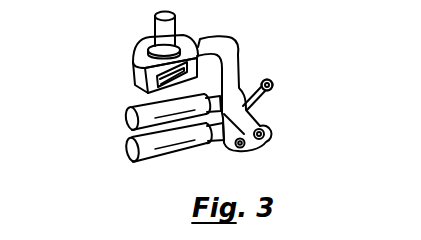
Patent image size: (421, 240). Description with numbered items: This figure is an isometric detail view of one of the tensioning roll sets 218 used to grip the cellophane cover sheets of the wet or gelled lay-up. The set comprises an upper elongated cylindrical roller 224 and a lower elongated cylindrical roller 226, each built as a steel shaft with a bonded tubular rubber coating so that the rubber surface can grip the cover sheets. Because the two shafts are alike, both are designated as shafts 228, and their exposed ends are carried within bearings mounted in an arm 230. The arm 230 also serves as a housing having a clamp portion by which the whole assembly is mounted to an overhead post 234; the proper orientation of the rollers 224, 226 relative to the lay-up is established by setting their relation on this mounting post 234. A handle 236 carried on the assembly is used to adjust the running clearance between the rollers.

The tensioning roll set 218 is at (126, 81).
The upper elongated cylindrical roller 224 is at (129, 117).
The lower elongated cylindrical roller 226 is at (129, 149).
The shaft 228 is at (238, 68).
The arm 230 is at (236, 39).
The overhead post 234 is at (176, 26).
The handle 236 is at (274, 86).